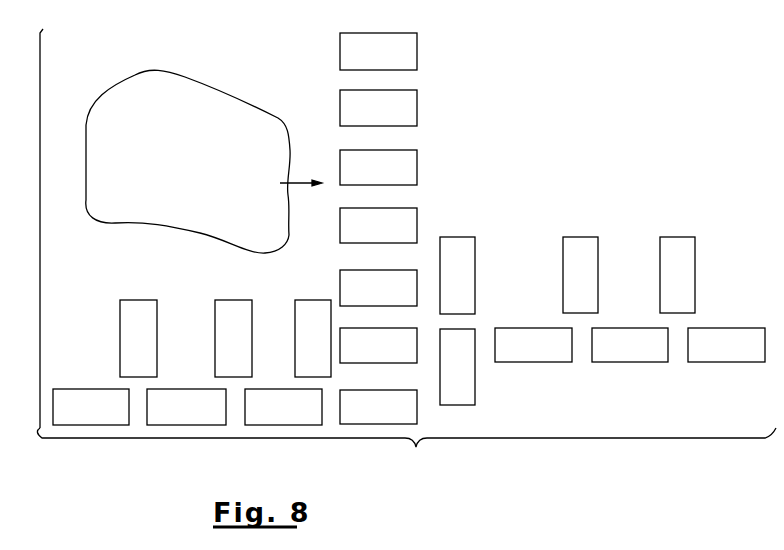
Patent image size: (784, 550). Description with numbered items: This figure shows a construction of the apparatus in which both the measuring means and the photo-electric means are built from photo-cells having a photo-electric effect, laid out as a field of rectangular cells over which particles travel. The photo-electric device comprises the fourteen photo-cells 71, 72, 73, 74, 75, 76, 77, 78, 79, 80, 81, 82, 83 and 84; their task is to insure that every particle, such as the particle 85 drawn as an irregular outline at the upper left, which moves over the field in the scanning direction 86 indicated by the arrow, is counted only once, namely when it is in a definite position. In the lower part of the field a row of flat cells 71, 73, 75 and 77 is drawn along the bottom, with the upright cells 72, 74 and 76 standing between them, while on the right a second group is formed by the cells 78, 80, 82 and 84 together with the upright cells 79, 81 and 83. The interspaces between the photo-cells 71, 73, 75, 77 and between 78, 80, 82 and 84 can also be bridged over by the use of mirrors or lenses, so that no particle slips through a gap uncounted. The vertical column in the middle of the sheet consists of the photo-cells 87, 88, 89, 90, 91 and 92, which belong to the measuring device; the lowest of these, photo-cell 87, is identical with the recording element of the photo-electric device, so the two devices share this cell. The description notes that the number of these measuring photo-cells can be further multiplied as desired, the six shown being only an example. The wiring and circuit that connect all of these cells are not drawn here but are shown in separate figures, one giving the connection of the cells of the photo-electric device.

The photo-cell 71 is at (108, 392).
The photo-cell 72 is at (150, 306).
The photo-cell 73 is at (202, 392).
The photo-cell 74 is at (245, 306).
The photo-cell 75 is at (294, 392).
The photo-cell 76 is at (324, 306).
The photo-cell 77 is at (406, 393).
The photo-cell 78 is at (474, 384).
The photo-cell 79 is at (473, 254).
The photo-cell 80 is at (513, 336).
The photo-cell 81 is at (597, 254).
The photo-cell 82 is at (608, 332).
The photo-cell 83 is at (694, 254).
The photo-cell 84 is at (712, 333).
The particle 85 is at (199, 169).
The scanning direction 86 is at (301, 176).
The photo-cell of the measuring device 87 is at (408, 331).
The photo-cell of the measuring device 88 is at (403, 273).
The photo-cell of the measuring device 89 is at (408, 213).
The photo-cell of the measuring device 90 is at (408, 155).
The photo-cell of the measuring device 91 is at (408, 95).
The photo-cell of the measuring device 92 is at (408, 38).